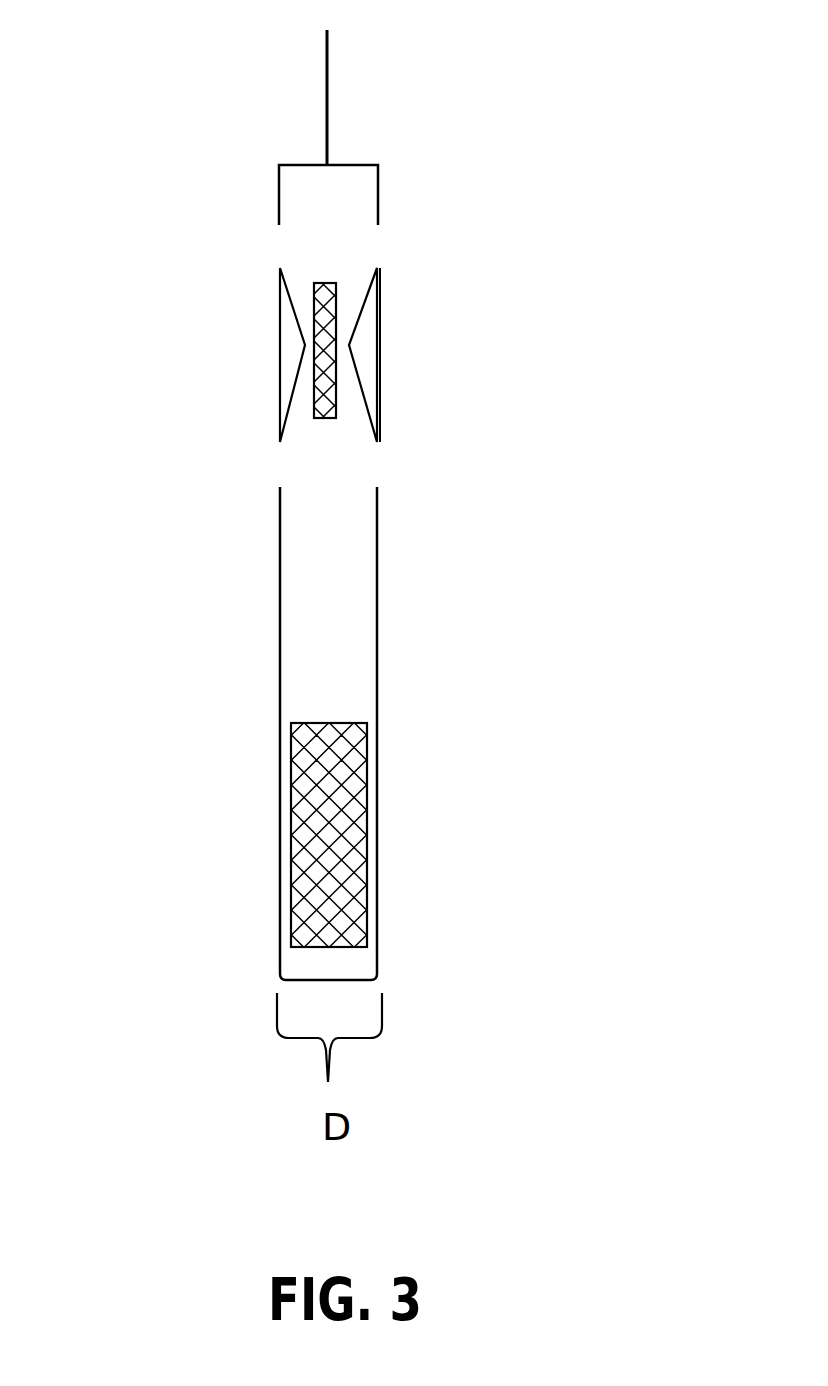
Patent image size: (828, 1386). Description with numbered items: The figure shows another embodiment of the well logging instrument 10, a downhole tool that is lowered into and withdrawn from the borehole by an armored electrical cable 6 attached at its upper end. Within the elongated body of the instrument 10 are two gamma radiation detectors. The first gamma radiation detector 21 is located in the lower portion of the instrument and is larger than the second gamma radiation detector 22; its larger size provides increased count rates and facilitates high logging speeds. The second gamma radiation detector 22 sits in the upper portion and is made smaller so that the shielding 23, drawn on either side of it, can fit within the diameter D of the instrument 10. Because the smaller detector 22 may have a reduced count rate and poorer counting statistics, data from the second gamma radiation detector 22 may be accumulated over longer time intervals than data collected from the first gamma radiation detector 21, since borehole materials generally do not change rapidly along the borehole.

The armored electrical cable 6 is at (327, 90).
The well logging instrument 10 is at (378, 187).
The first gamma radiation detector 21 is at (308, 818).
The second gamma radiation detector 22 is at (318, 283).
The shielding 23 is at (380, 333).